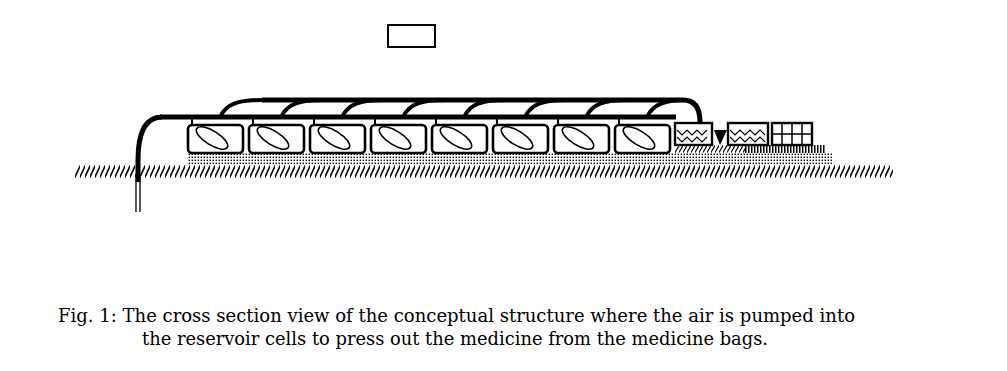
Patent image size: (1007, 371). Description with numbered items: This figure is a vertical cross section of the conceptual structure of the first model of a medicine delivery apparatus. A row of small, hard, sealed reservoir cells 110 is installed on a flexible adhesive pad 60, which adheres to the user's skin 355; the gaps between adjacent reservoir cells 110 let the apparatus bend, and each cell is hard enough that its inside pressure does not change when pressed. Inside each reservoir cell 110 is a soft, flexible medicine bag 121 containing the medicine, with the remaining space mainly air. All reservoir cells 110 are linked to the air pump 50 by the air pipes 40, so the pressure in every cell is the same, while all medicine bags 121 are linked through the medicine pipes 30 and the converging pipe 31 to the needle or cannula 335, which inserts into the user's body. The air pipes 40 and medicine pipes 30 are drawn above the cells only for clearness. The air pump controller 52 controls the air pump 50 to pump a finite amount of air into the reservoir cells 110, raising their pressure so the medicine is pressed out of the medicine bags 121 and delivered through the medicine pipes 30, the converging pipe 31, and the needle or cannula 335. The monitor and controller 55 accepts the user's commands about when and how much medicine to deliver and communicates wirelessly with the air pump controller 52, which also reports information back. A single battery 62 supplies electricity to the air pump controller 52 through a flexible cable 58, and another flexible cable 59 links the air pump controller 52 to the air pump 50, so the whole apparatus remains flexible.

The medicine pipes 30 is at (192, 110).
The converging pipe 31 is at (142, 126).
The air pipes 40 is at (549, 92).
The air pump 50 is at (708, 116).
The air pump controller 52 is at (752, 116).
The monitor and controller 55 is at (448, 37).
The flexible cable 58 is at (836, 143).
The flexible cable 59 is at (721, 128).
The flexible adhesive pad 60 is at (829, 160).
The batteries 62 is at (814, 122).
The reservoir cells 110 is at (415, 158).
The medicine bag 121 is at (449, 147).
The needle or cannula 335 is at (131, 207).
The user's skin 355 is at (697, 181).